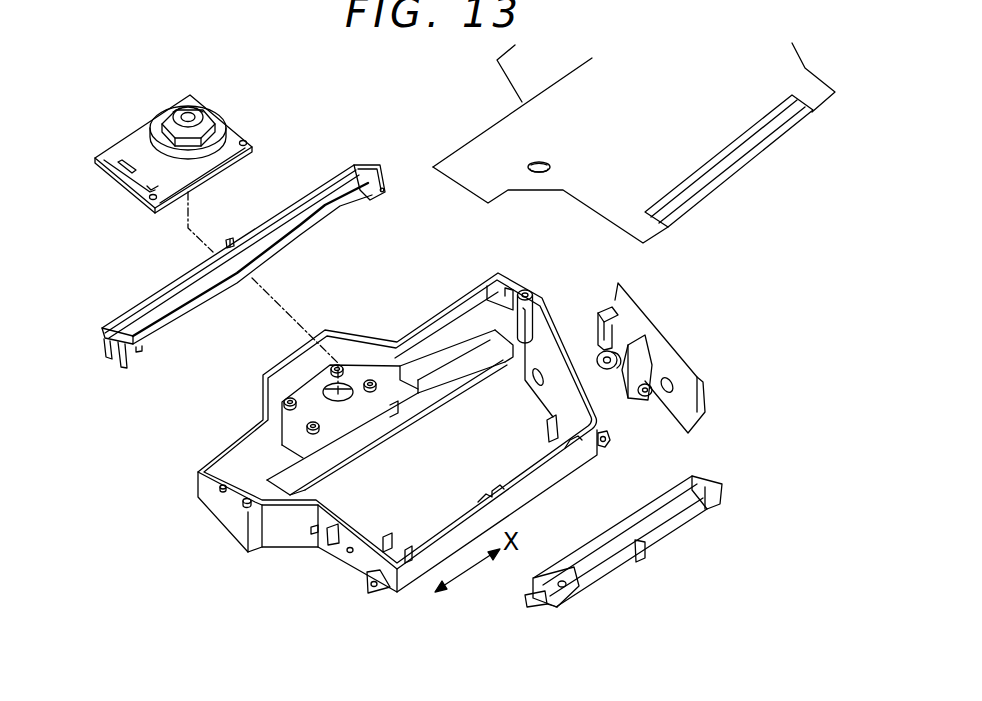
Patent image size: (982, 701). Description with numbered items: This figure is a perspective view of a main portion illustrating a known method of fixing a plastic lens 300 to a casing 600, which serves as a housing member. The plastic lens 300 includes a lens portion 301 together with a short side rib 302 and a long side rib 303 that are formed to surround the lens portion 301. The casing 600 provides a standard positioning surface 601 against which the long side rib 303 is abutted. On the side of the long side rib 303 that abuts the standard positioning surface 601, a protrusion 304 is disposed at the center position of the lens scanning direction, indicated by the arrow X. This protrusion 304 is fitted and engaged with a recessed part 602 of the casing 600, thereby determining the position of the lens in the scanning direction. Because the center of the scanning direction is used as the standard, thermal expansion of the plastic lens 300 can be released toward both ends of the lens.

The plastic lens 300 is at (212, 251).
The lens portion 301 is at (304, 228).
The short side rib 302 is at (380, 165).
The long side rib 303 is at (183, 281).
The protrusion 304 is at (228, 240).
The casing 600 is at (384, 441).
The standard positioning surface 601 is at (445, 345).
The recessed part 602 is at (388, 404).